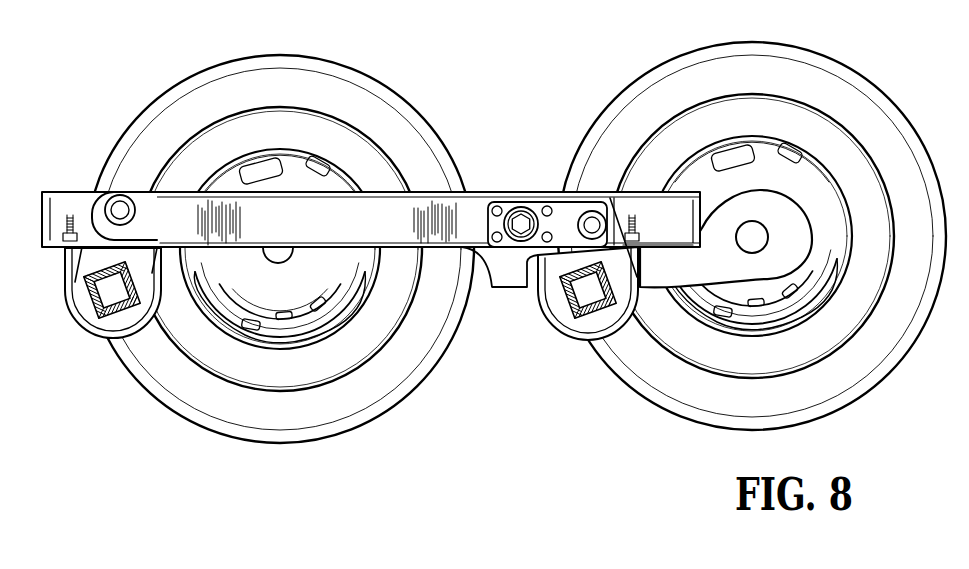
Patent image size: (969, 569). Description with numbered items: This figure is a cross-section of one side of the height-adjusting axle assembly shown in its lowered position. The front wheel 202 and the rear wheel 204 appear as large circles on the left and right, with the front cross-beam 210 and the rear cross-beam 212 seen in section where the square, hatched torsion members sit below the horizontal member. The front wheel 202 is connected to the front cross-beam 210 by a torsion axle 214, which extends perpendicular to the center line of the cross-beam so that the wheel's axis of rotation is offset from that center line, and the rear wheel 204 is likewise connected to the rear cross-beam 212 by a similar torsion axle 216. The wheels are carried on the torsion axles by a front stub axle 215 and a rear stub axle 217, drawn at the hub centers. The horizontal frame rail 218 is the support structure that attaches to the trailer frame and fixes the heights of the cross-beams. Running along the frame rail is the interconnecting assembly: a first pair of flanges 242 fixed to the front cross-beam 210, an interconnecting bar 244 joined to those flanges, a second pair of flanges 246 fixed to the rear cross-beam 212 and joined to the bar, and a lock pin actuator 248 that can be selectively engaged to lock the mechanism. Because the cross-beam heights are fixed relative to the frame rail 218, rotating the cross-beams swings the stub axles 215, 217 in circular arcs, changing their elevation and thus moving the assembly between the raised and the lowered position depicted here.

The front wheels 202 is at (338, 64).
The rear wheels 204 is at (657, 67).
The front cross-beam 210 is at (110, 332).
The rear cross-beam 212 is at (582, 317).
The torsion axles 214 is at (183, 303).
The front stub axles 215 is at (278, 262).
The torsion axles 216 is at (650, 292).
The rear stub axles 217 is at (757, 235).
The frame rail 218 is at (484, 200).
The first pair of flanges 242 is at (90, 223).
The interconnecting bar 244 is at (412, 207).
The second pair of flanges 246 is at (560, 298).
The lock pin actuator 248 is at (520, 208).